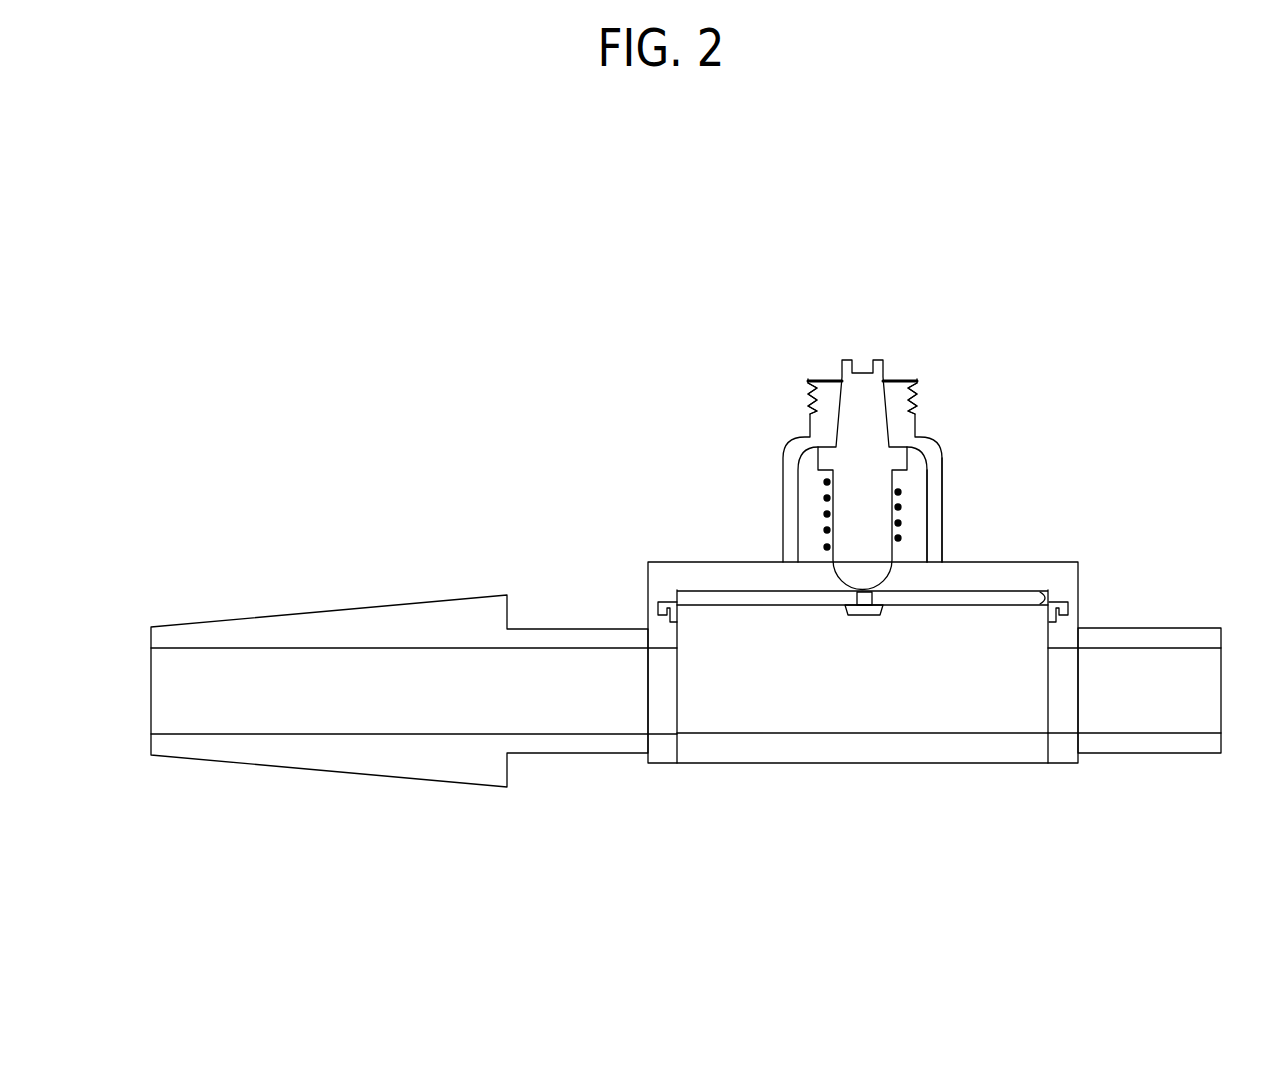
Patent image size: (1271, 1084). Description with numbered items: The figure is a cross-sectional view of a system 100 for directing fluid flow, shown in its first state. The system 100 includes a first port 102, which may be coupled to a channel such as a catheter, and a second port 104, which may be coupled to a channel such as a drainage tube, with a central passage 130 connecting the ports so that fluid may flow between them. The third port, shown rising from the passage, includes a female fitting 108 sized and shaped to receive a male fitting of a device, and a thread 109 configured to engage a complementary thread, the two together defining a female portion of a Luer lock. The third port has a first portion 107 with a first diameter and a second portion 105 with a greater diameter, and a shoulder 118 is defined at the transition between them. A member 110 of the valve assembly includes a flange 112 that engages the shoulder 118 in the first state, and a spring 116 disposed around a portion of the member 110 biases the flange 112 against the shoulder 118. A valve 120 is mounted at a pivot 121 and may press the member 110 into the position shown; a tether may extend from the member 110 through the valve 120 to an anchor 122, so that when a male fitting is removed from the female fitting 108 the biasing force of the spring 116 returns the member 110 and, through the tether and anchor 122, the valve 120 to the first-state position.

The system 100 is at (468, 530).
The first port 102 is at (278, 765).
The second port 104 is at (1113, 755).
The second portion 105 is at (945, 523).
The first portion 107 is at (920, 420).
The female fitting 108 is at (857, 366).
The thread 109 is at (917, 397).
The member 110 is at (925, 476).
The flange 112 is at (786, 460).
The spring 116 is at (827, 495).
The shoulder 118 is at (808, 440).
The valve 120 is at (740, 607).
The pivot 121 is at (1045, 594).
The anchor 122 is at (863, 615).
The central passage 130 is at (900, 705).